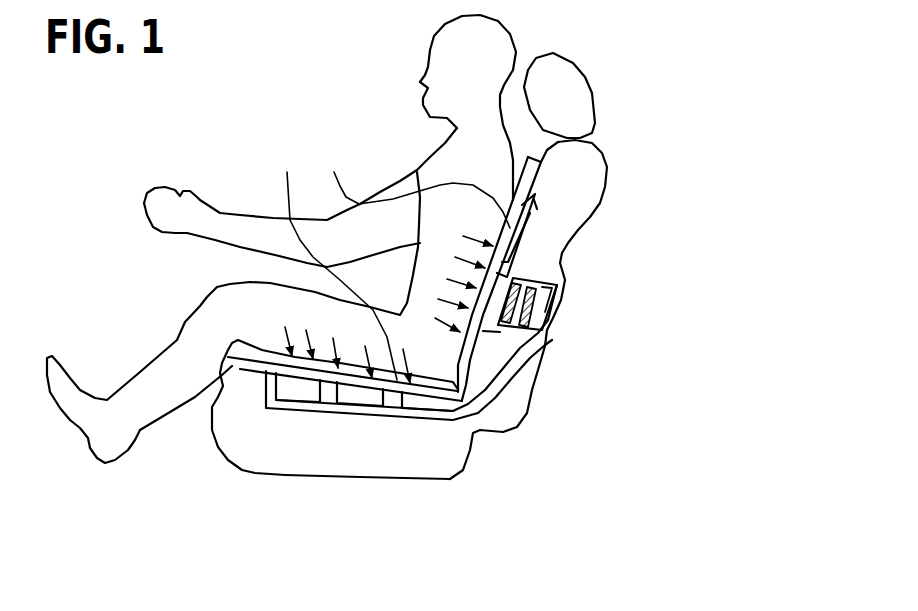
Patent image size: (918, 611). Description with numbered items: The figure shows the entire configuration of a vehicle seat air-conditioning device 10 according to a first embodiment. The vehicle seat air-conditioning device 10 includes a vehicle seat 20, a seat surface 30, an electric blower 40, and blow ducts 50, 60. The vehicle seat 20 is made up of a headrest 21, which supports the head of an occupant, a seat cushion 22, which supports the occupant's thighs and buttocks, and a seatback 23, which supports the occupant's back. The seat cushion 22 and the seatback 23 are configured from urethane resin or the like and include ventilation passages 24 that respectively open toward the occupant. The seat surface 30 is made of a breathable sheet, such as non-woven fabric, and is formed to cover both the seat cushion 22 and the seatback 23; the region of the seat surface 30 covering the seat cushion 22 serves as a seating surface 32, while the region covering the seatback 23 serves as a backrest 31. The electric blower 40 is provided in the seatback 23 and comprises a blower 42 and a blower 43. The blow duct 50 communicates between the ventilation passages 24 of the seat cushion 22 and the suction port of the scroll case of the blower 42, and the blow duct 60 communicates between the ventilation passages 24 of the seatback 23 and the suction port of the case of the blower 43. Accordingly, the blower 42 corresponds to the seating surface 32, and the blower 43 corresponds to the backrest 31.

The vehicle seat air-conditioning device 10 is at (222, 546).
The vehicle seat 20 is at (780, 324).
The headrest 21 is at (650, 208).
The seat cushion 22 is at (531, 447).
The seatback 23 is at (494, 309).
The ventilation passages 24 is at (423, 342).
The seat surface 30 is at (388, 245).
The backrest 31 is at (413, 186).
The seating surface 32 is at (332, 262).
The electric blower 40 is at (598, 294).
The blower 42 is at (652, 262).
The blower 43 is at (575, 291).
The blow duct 50 is at (409, 439).
The blow duct 60 is at (596, 203).